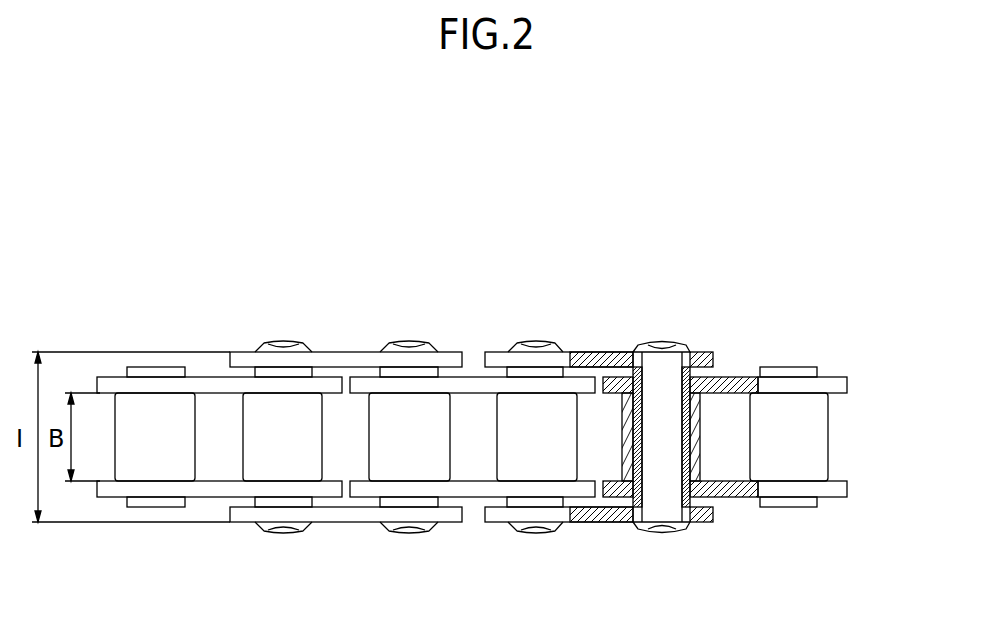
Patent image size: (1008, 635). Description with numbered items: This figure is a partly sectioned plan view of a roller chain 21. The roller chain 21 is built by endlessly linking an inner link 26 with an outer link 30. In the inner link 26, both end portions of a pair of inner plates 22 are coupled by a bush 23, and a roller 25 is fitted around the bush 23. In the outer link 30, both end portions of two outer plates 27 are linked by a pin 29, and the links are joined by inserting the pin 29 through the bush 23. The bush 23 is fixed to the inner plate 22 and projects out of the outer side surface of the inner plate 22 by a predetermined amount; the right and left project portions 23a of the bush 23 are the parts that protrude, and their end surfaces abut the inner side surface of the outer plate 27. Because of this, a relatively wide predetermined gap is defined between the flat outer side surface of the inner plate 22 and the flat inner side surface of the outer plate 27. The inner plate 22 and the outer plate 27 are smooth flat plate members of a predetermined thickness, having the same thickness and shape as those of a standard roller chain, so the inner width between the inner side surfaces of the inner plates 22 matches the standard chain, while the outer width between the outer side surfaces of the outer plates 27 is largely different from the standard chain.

The roller chain 21 is at (632, 252).
The inner plate 22 is at (828, 383).
The bush 23 is at (689, 350).
The project portion 23a is at (622, 352).
The roller 25 is at (620, 410).
The inner link 26 is at (803, 550).
The outer plate 27 is at (500, 353).
The pin 29 is at (537, 341).
The outer link 30 is at (480, 542).